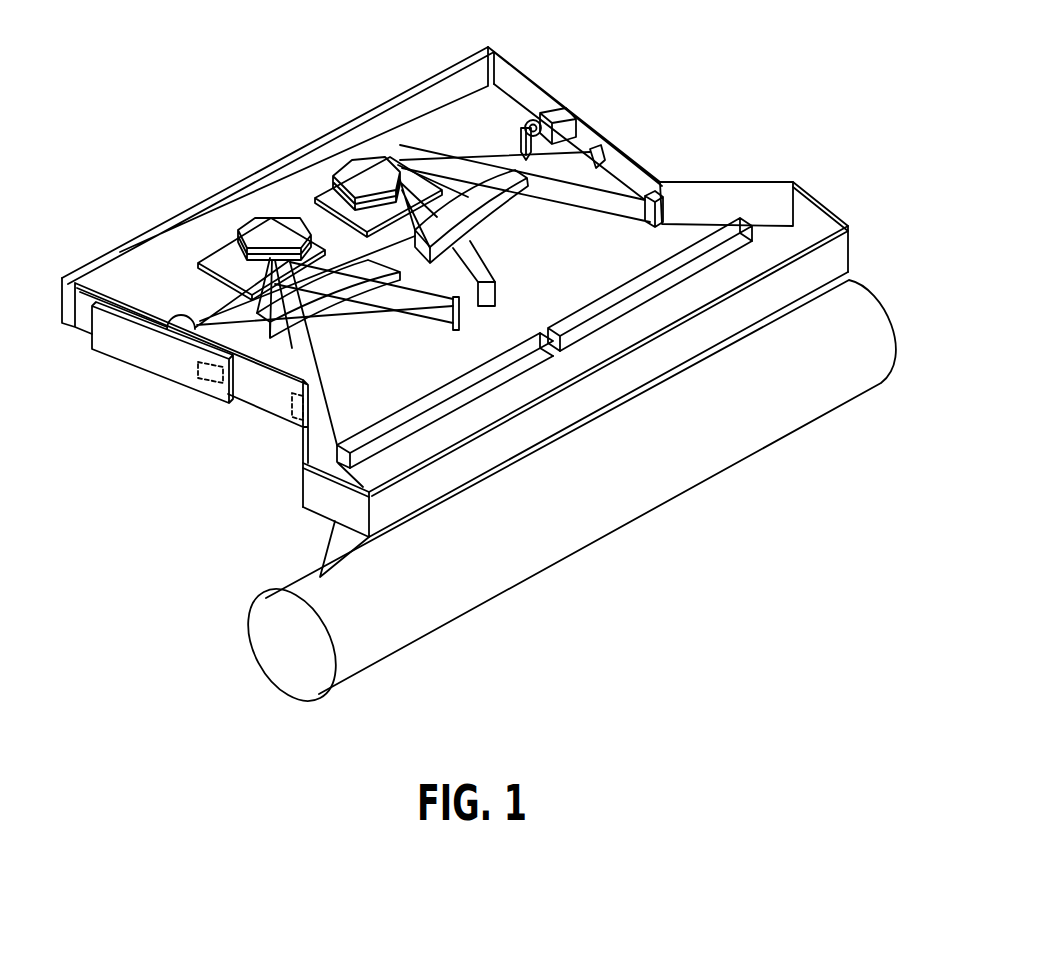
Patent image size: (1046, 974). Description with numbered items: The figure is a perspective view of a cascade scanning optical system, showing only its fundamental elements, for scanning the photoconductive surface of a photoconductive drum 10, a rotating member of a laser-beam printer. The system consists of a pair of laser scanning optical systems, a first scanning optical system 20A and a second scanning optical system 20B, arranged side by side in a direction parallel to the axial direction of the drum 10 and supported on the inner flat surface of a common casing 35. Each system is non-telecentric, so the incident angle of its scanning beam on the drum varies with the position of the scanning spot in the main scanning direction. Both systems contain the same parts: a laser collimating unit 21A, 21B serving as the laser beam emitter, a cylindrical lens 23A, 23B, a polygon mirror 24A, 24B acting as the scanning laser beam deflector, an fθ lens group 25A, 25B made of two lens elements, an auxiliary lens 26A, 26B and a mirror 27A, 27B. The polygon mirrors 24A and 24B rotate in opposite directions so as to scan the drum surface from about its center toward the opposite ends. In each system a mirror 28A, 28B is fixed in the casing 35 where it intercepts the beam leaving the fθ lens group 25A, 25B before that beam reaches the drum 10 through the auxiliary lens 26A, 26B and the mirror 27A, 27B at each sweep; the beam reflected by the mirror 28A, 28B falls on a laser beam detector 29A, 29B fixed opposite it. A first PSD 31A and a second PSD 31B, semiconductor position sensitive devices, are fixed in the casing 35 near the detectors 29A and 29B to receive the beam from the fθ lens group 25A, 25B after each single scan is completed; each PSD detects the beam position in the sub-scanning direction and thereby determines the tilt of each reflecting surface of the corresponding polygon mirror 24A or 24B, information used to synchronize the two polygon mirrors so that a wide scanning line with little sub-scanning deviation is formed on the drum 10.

The photoconductive drum 10 is at (855, 303).
The first scanning optical system 20A is at (204, 230).
The second scanning optical system 20B is at (418, 112).
The laser collimating unit 21A is at (197, 323).
The laser collimating unit 21B is at (523, 117).
The cylindrical lens 23A is at (192, 323).
The cylindrical lens 23B is at (522, 126).
The polygon mirror 24A is at (266, 222).
The polygon mirror 24B is at (352, 162).
The fθ lens group 25A is at (153, 376).
The fθ lens group 25B is at (528, 180).
The auxiliary lens 26A is at (464, 476).
The auxiliary lens 26B is at (652, 316).
The mirror 27A is at (472, 402).
The mirror 27B is at (670, 307).
The mirror 28A is at (453, 320).
The mirror 28B is at (504, 284).
The laser beam detector 29A is at (200, 384).
The laser beam detector 29B is at (603, 152).
The first PSD 31A is at (310, 412).
The second PSD 31B is at (700, 183).
The casing 35 is at (517, 86).